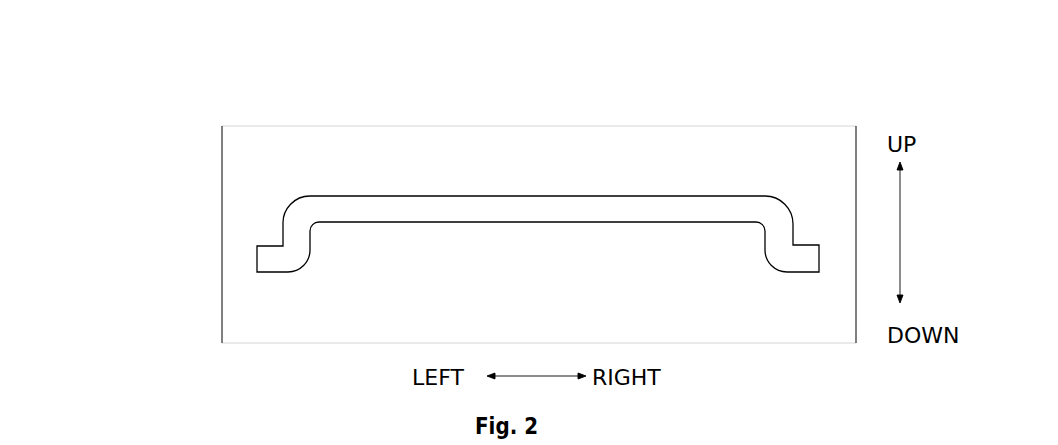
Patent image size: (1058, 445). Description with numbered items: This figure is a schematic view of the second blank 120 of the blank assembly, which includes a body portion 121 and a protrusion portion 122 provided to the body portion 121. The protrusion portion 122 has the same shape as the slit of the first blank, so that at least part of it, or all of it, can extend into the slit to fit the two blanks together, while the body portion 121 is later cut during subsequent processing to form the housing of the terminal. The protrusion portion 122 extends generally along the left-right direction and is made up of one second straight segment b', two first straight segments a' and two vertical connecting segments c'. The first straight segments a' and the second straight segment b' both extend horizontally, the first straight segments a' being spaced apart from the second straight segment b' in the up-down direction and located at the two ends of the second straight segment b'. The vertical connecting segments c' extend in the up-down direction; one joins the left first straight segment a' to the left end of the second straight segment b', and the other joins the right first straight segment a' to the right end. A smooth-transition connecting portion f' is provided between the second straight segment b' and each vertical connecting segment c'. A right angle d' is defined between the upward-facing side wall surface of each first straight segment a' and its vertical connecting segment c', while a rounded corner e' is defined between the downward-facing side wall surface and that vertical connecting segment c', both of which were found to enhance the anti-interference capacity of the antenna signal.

The second blank 120 is at (449, 171).
The body portion 121 is at (453, 140).
The protrusion portion 122 is at (105, 93).
The first straight segment a' is at (190, 250).
The second straight segment b' is at (245, 142).
The vertical connecting segment c' is at (204, 194).
The right angle d' is at (197, 212).
The rounded corner e' is at (207, 236).
The smooth-transition connecting portion f' is at (206, 161).